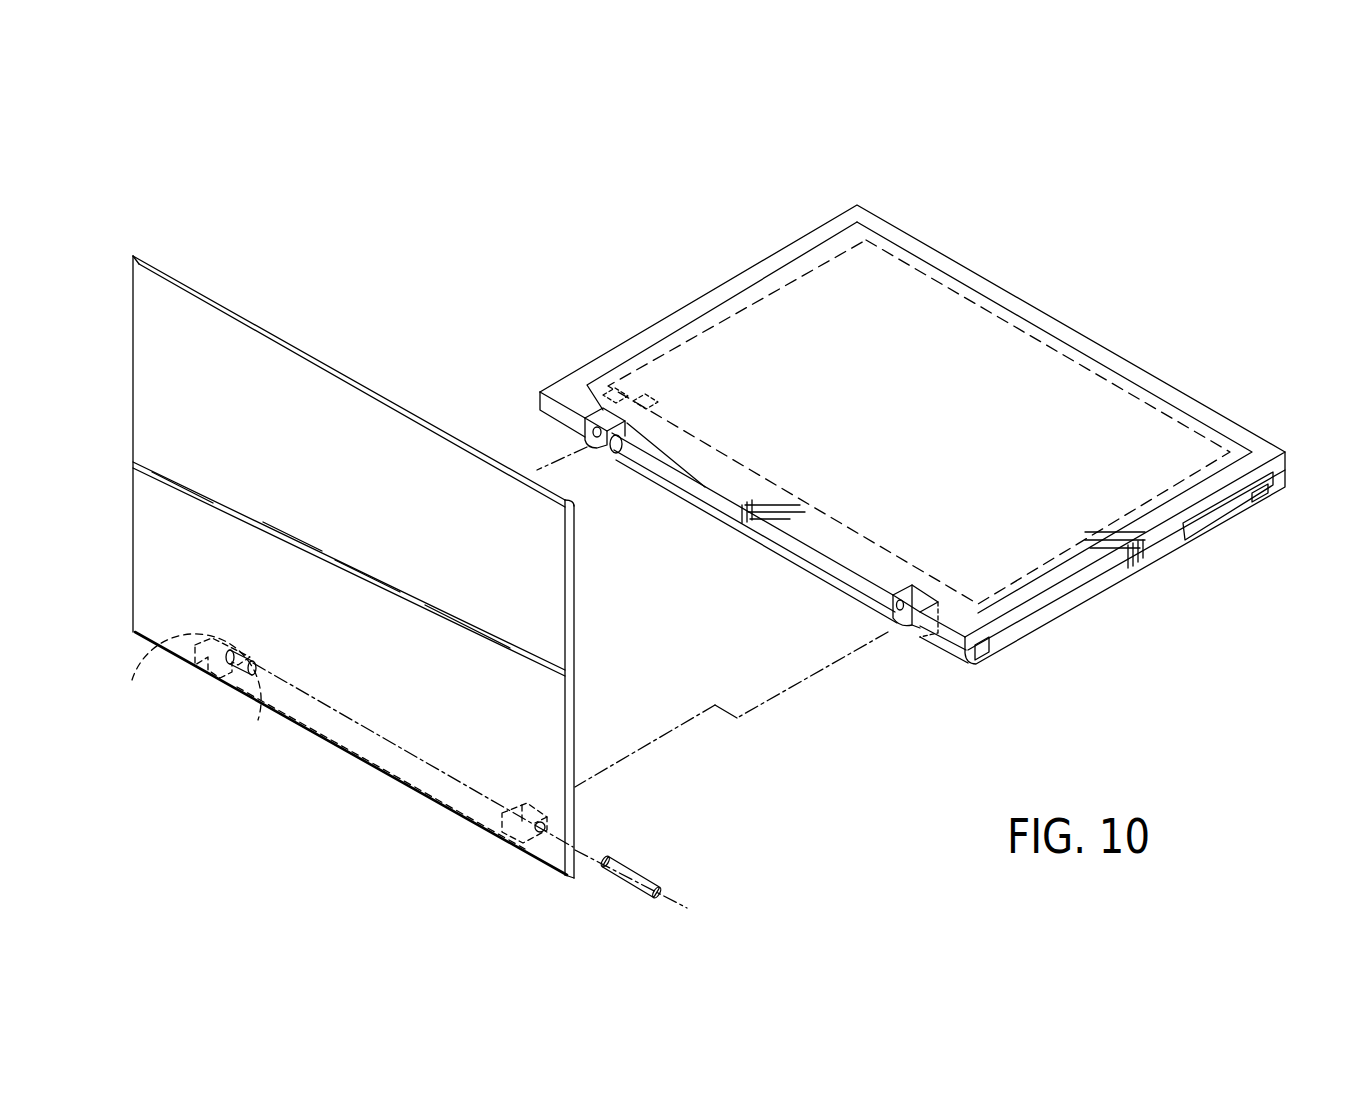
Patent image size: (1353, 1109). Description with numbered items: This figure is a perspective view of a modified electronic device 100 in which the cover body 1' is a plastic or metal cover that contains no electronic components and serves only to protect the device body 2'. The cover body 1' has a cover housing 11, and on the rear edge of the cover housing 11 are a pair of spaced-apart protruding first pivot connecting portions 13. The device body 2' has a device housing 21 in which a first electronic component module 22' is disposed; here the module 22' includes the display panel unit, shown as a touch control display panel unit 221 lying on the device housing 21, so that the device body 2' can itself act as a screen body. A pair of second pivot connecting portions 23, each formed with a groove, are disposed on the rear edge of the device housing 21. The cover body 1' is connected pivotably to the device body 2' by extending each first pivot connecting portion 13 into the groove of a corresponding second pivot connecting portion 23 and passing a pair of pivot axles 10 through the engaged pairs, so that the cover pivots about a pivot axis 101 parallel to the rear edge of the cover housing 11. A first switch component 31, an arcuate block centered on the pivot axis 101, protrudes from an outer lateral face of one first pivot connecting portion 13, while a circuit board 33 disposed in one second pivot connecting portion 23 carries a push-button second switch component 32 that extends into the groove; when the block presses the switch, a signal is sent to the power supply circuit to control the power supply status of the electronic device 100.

The electronic device 100 is at (598, 272).
The cover body 1' is at (443, 569).
The cover housing 11 is at (398, 406).
The first pivot connecting portions 13 is at (233, 690).
The pivot axles 10 is at (264, 703).
The pivot axis 101 is at (677, 900).
The first switch component 31 is at (190, 677).
The device body 2' is at (888, 451).
The device housing 21 is at (963, 278).
The first electronic component module 22' is at (919, 420).
The touch control display panel unit 221 is at (1073, 387).
The second pivot connecting portions 23 is at (714, 541).
The second switch component 32 is at (585, 407).
The circuit board 33 is at (585, 442).